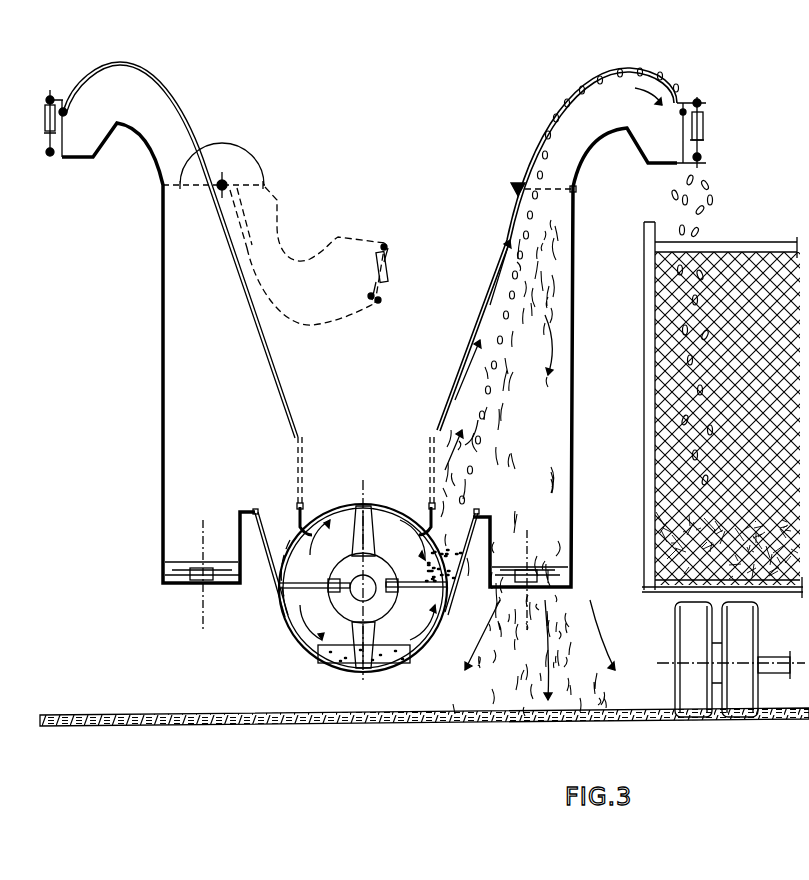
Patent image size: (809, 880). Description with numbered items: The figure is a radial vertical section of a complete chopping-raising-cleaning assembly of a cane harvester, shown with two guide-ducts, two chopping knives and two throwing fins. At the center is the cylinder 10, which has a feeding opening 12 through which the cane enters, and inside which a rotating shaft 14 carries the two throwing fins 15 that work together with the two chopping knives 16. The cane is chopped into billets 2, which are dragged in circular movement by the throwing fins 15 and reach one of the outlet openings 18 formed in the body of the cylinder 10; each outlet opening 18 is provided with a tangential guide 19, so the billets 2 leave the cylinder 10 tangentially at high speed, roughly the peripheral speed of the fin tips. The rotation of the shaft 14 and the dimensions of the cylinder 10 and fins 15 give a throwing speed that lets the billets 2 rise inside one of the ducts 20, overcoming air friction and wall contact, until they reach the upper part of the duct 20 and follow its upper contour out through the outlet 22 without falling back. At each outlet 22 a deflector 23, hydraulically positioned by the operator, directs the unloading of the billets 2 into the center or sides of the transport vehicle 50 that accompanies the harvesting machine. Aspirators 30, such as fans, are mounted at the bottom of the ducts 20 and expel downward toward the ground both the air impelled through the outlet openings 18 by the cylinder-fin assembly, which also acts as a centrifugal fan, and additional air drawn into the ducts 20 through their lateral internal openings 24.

The billets 2 is at (345, 665).
The cylinder 10 is at (330, 668).
The feeding opening 12 is at (352, 665).
The shaft 14 is at (335, 605).
The throwing fin 15 is at (290, 595).
The chopping knife 16 is at (362, 535).
The outlet opening 18 is at (300, 528).
The tangential guide 19 is at (266, 578).
The duct 20 is at (143, 70).
The outlet 22 is at (93, 152).
The deflector 23 is at (63, 148).
The lateral internal opening 24 is at (303, 462).
The aspirator 30 is at (537, 575).
The transport vehicle 50 is at (648, 598).